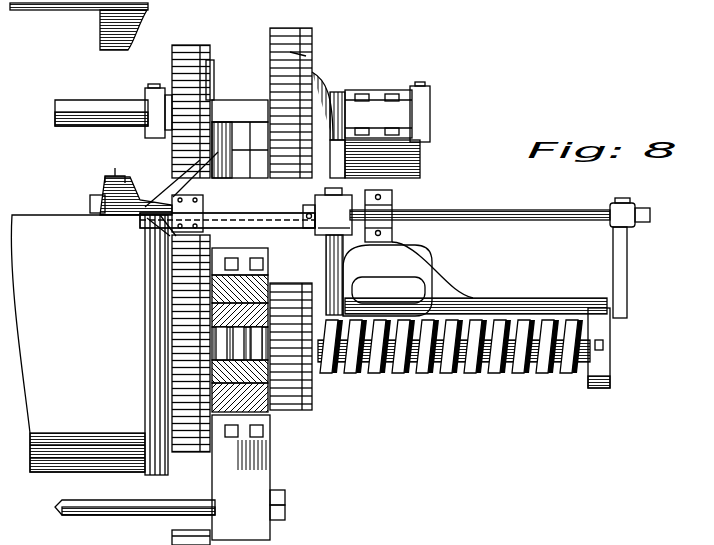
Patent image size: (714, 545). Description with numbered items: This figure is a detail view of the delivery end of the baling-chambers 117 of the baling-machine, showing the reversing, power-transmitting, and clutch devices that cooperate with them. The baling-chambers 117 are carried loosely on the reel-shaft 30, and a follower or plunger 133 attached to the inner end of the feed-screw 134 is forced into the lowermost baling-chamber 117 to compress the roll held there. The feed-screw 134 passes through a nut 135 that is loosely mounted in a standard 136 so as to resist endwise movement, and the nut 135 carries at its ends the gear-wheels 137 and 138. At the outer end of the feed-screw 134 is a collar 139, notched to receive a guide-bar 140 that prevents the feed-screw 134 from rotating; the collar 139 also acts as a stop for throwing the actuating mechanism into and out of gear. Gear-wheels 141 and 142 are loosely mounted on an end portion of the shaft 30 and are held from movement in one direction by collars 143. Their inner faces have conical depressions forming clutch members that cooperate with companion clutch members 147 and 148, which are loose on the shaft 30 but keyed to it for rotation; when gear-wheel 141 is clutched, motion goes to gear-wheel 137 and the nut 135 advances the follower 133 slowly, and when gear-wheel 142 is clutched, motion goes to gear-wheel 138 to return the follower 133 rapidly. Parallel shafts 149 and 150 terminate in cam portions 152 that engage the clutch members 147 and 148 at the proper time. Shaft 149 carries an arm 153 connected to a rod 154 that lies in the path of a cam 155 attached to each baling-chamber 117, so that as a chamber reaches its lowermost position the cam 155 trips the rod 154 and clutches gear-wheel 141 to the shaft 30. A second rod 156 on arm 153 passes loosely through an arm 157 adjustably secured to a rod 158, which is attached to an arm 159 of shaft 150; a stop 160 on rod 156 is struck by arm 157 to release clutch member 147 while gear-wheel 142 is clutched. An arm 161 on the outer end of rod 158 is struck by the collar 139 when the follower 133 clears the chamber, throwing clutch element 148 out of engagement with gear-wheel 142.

The reel-shaft 30 is at (110, 99).
The baling-chamber 117 is at (79, 237).
The follower or plunger 133 is at (150, 353).
The feed-screw 134 is at (438, 372).
The nut 135 is at (277, 410).
The standard 136 is at (272, 440).
The gear-wheel 137 is at (196, 454).
The gear-wheel 138 is at (312, 392).
The collar 139 is at (611, 325).
The guide-bar 140 is at (542, 298).
The gear-wheel 141 is at (198, 35).
The gear-wheel 142 is at (306, 276).
The collar 143 is at (350, 87).
The clutch member 147 is at (216, 82).
The clutch member 148 is at (290, 52).
The shaft 149 is at (143, 213).
The shaft 150 is at (340, 146).
The cam portion 152 is at (220, 148).
The arm 153 is at (147, 238).
The rod 154 is at (175, 193).
The cam 155 is at (100, 40).
The rod 156 is at (171, 214).
The arm 157 is at (345, 270).
The rod 158 is at (440, 210).
The arm 159 is at (330, 165).
The stop 160 is at (328, 240).
The arm 161 is at (641, 258).